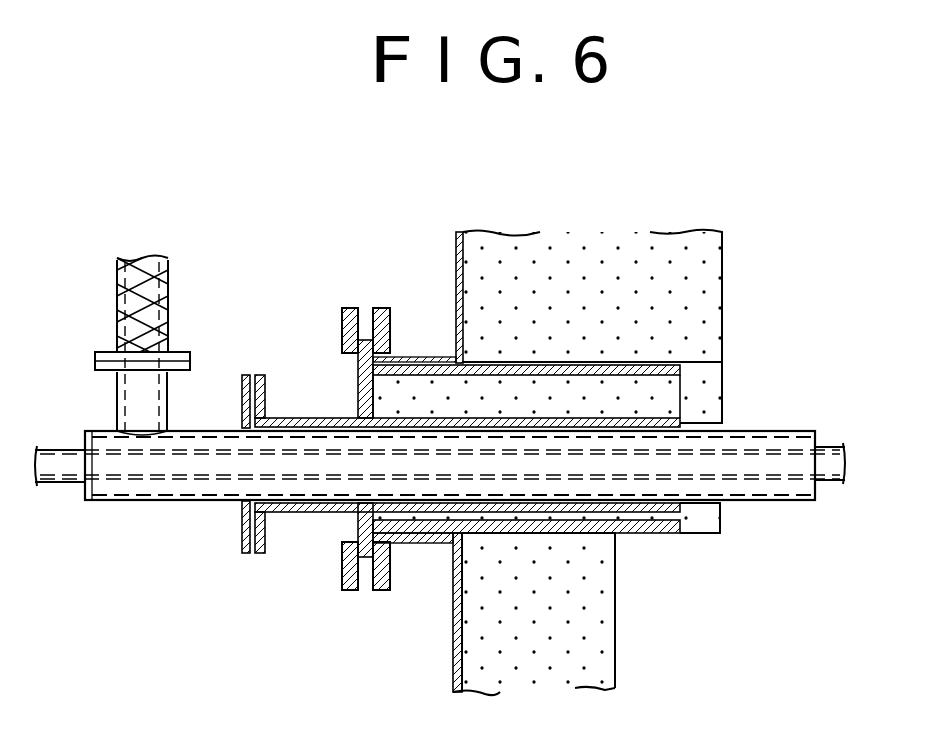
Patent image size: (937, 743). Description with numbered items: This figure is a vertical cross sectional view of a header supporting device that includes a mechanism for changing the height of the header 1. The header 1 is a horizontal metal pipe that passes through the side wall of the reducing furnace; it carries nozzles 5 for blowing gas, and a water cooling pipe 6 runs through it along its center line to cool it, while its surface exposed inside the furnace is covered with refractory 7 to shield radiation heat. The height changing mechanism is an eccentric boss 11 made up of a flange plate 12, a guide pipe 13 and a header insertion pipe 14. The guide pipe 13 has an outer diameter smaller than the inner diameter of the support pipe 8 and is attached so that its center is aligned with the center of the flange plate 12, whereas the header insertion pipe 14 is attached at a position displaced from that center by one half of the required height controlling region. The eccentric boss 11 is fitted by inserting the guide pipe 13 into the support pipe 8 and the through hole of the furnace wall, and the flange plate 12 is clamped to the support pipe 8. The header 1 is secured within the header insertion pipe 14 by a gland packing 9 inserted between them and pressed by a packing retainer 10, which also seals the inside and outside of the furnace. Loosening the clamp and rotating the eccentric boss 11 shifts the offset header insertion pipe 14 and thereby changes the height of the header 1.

The header 1 is at (98, 420).
The nozzle 5 is at (342, 325).
The water cooling pipe 6 is at (63, 483).
The refractory 7 is at (722, 403).
The support pipe 8 is at (434, 543).
The gland packing 9 is at (302, 512).
The packing retainer 10 is at (243, 403).
The eccentric boss 11 is at (733, 366).
The flange plate 12 is at (358, 385).
The guide pipe 13 is at (643, 533).
The header insertion pipe 14 is at (318, 512).